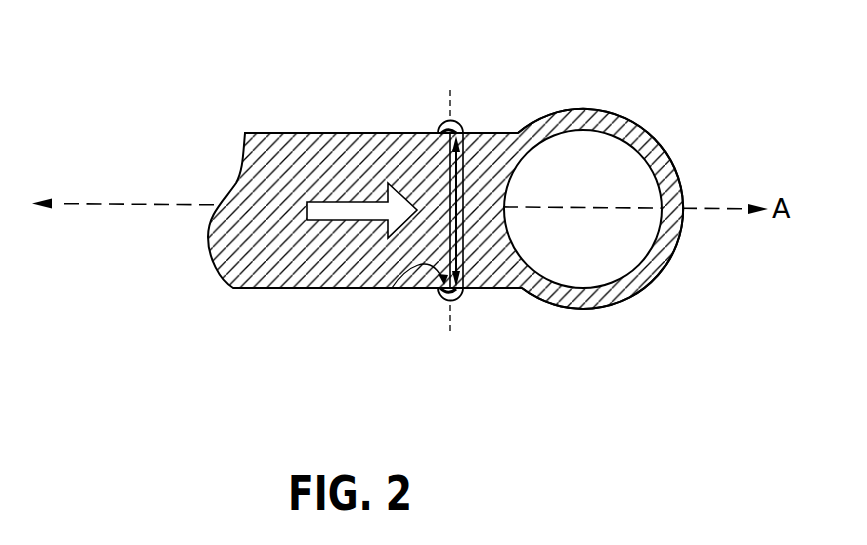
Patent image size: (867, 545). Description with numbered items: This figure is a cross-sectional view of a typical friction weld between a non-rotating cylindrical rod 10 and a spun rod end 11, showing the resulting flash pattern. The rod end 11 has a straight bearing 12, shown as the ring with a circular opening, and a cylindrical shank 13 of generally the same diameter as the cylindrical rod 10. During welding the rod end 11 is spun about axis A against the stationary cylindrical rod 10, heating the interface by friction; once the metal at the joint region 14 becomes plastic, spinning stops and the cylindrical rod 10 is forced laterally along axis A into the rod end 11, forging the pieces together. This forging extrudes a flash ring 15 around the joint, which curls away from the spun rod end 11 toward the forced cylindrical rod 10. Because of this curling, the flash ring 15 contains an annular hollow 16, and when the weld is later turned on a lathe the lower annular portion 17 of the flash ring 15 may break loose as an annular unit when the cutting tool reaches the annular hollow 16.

The cylindrical rod 10 is at (413, 133).
The rod end 11 is at (567, 92).
The straight bearing 12 is at (630, 172).
The cylindrical shank 13 is at (487, 133).
The joint region 14 is at (463, 213).
The flash ring 15 is at (456, 121).
The annular hollow 16 is at (392, 288).
The lower annular portion 17 is at (440, 299).